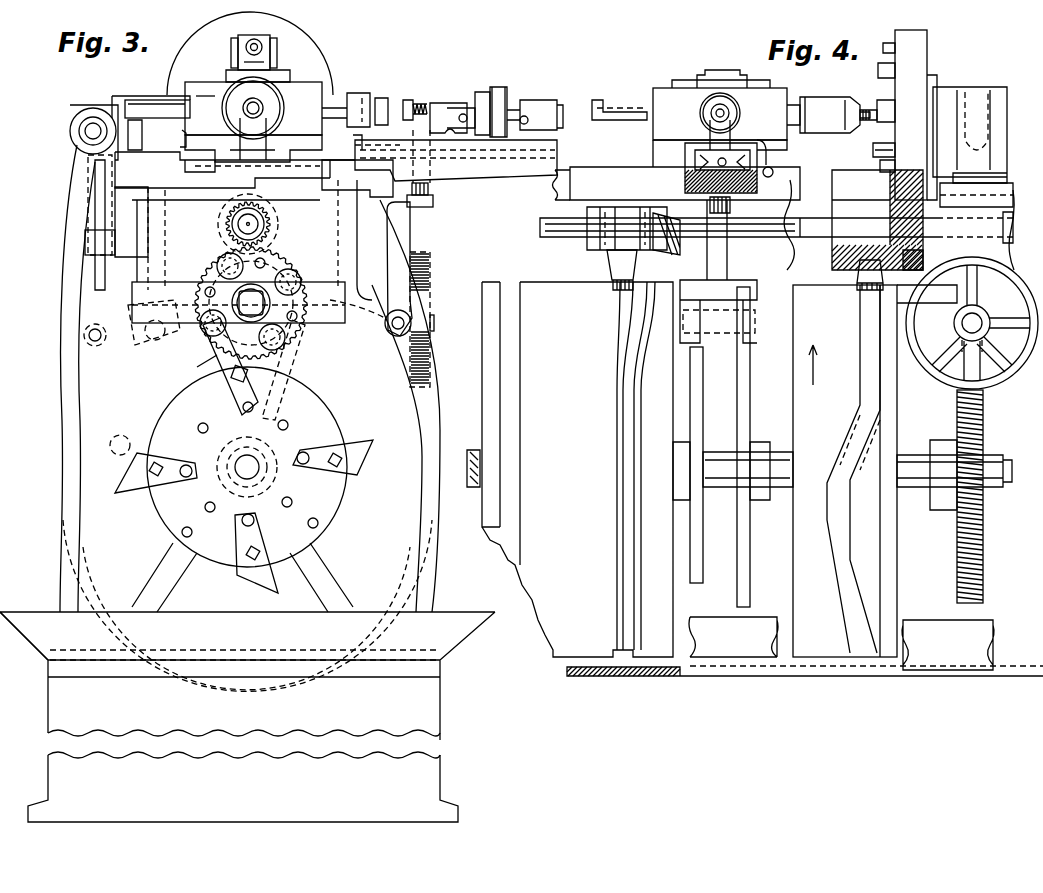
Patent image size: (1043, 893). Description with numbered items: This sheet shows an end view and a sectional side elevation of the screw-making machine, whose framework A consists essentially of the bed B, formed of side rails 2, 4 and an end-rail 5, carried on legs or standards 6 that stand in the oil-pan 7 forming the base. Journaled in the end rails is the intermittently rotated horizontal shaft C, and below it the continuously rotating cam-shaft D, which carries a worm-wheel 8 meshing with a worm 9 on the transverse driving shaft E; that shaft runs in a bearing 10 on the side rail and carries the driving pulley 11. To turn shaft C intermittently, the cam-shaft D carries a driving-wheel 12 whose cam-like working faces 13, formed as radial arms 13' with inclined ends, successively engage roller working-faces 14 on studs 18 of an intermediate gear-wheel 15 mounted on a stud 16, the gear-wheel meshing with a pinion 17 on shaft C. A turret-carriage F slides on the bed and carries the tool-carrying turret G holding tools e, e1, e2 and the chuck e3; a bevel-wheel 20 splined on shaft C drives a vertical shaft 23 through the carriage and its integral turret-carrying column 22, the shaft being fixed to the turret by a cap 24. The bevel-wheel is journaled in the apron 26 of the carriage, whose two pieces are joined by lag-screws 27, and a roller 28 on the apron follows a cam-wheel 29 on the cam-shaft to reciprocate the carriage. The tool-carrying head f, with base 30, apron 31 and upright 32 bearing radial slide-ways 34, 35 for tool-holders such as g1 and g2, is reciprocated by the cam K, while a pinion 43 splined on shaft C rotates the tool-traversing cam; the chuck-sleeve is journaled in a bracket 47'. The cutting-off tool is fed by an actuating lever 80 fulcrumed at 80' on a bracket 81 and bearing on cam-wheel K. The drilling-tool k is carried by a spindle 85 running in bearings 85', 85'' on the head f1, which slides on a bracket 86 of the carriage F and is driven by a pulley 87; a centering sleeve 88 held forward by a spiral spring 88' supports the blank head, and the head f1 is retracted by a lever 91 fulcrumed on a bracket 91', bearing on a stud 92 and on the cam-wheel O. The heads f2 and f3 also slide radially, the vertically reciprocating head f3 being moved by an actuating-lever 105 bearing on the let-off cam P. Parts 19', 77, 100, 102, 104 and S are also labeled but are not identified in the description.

In FIG. 3, the side rail 2 is at (357, 228).
In FIG. 4, the side rail 2 is at (1012, 210).
In FIG. 3, the side rail 4 is at (148, 209).
In FIG. 3, the end-rail 5 is at (340, 243).
In FIG. 3, the leg or standard 6 is at (247, 605).
In FIG. 3, the oil-pan 7 is at (385, 614).
In FIG. 4, the worm-wheel 8 is at (984, 452).
In FIG. 3, the worm 9 is at (262, 42).
In FIG. 4, the worm 9 is at (988, 338).
In FIG. 4, the bearing 10 is at (955, 297).
In FIG. 3, the driving pulley 11 is at (424, 278).
In FIG. 4, the driving pulley 11 is at (940, 374).
In FIG. 3, the driving-wheel 12 is at (325, 490).
In FIG. 3, the cam-like working faces 13 is at (207, 361).
In FIG. 3, the radially-disposed projecting arms 13' is at (243, 513).
In FIG. 3, the working-faces (rollers) 14 is at (222, 263).
In FIG. 3, the intermediate gear-wheel 15 is at (277, 268).
In FIG. 3, the stud 16 is at (272, 303).
In FIG. 3, the pinion 17 is at (268, 223).
In FIG. 3, the studs 18 is at (301, 282).
In FIG. 3, the jaw operating arm 19' is at (252, 431).
In FIG. 4, the bevel-wheel 20 is at (667, 255).
In FIG. 3, the turret-carrying column 22 is at (253, 147).
In FIG. 4, the turret-carrying column 22 is at (660, 145).
In FIG. 3, the vertical shaft 23 is at (272, 50).
In FIG. 4, the vertical shaft 23 is at (721, 70).
In FIG. 3, the cap 24 is at (284, 76).
In FIG. 4, the cap 24 is at (690, 82).
In FIG. 4, the apron or depending portion 26 is at (608, 233).
In FIG. 4, the lag-screws 27 is at (630, 235).
In FIG. 4, the stud or roller 28 is at (618, 288).
In FIG. 3, the cam-wheel 29 is at (427, 422).
In FIG. 4, the cam-wheel 29 is at (570, 469).
In FIG. 3, the base 30 is at (345, 172).
In FIG. 4, the base 30 is at (850, 176).
In FIG. 4, the depending portion or apron 31 is at (860, 250).
In FIG. 3, the upright or tool-carrying portion 32 is at (318, 62).
In FIG. 4, the upright or tool-carrying portion 32 is at (927, 57).
In FIG. 3, the slide-way 34 is at (231, 50).
In FIG. 4, the slide-way 34 is at (890, 53).
In FIG. 4, the slide-way 35 is at (887, 133).
In FIG. 4, the pinion 43 is at (912, 268).
In FIG. 4, the bracket 47' is at (970, 113).
In FIG. 3, the latch 77 is at (182, 136).
In FIG. 3, the actuating lever 80 is at (63, 378).
In FIG. 3, the fulcrum 80' is at (70, 222).
In FIG. 3, the bracket 81 is at (112, 242).
In FIG. 3, the spindle 85 is at (567, 122).
In FIG. 3, the bearing 85' is at (535, 104).
In FIG. 4, the bearing 85' is at (700, 135).
In FIG. 3, the bearing 85'' is at (490, 101).
In FIG. 3, the bracket 86 is at (515, 169).
In FIG. 3, the pulley 87 is at (505, 98).
In FIG. 4, the pulley 87 is at (742, 108).
In FIG. 3, the head-engaging or centering sleeve 88 is at (410, 98).
In FIG. 3, the spiral spring 88' is at (430, 90).
In FIG. 3, the retracting-lever 91 is at (408, 269).
In FIG. 4, the retracting-lever 91 is at (718, 271).
In FIG. 3, the bracket 91' is at (396, 304).
In FIG. 4, the bracket 91' is at (698, 317).
In FIG. 3, the stud 92 is at (432, 199).
In FIG. 4, the stud 92 is at (710, 206).
In FIG. 3, the pedestal 100 is at (268, 126).
In FIG. 3, the pulley shaft 102 is at (276, 104).
In FIG. 3, the cover plate 104 is at (222, 94).
In FIG. 3, the actuating-lever 105 is at (135, 360).
In FIG. 3, the framework A is at (247, 697).
In FIG. 3, the bed B is at (238, 291).
In FIG. 4, the bed B is at (793, 225).
In FIG. 3, the horizontal shaft C is at (246, 225).
In FIG. 4, the horizontal shaft C is at (540, 228).
In FIG. 3, the cam-shaft D is at (240, 470).
In FIG. 4, the cam-shaft D is at (915, 458).
In FIG. 3, the driving shaft E is at (434, 323).
In FIG. 4, the driving shaft E is at (990, 323).
In FIG. 3, the carriage or turret-slide F is at (235, 163).
In FIG. 4, the carriage or turret-slide F is at (677, 183).
In FIG. 3, the tool-carrying turret G is at (253, 108).
In FIG. 4, the tool-carrying turret G is at (720, 114).
In FIG. 4, the cam K is at (845, 471).
In FIG. 4, the cam-wheel O is at (697, 390).
In FIG. 4, the let-off cam P is at (748, 400).
In FIG. 4, the screw S is at (868, 103).
In FIG. 3, the tool e is at (150, 100).
In FIG. 4, the tool e1 is at (615, 112).
In FIG. 3, the tool e2 is at (372, 96).
In FIG. 4, the chuck e3 is at (826, 97).
In FIG. 4, the tool-carrying head f is at (912, 71).
In FIG. 3, the tool-carrying head f1 is at (470, 108).
In FIG. 4, the tool-carrying head f1 is at (768, 117).
In FIG. 3, the tool-carrying head f2 is at (253, 108).
In FIG. 3, the tool-carrying head f3 is at (88, 130).
In FIG. 4, the tool-carrying slide or holder g1 is at (890, 112).
In FIG. 4, the tool-carrying slide or holder g2 is at (885, 182).
In FIG. 3, the drilling-tool k is at (448, 106).